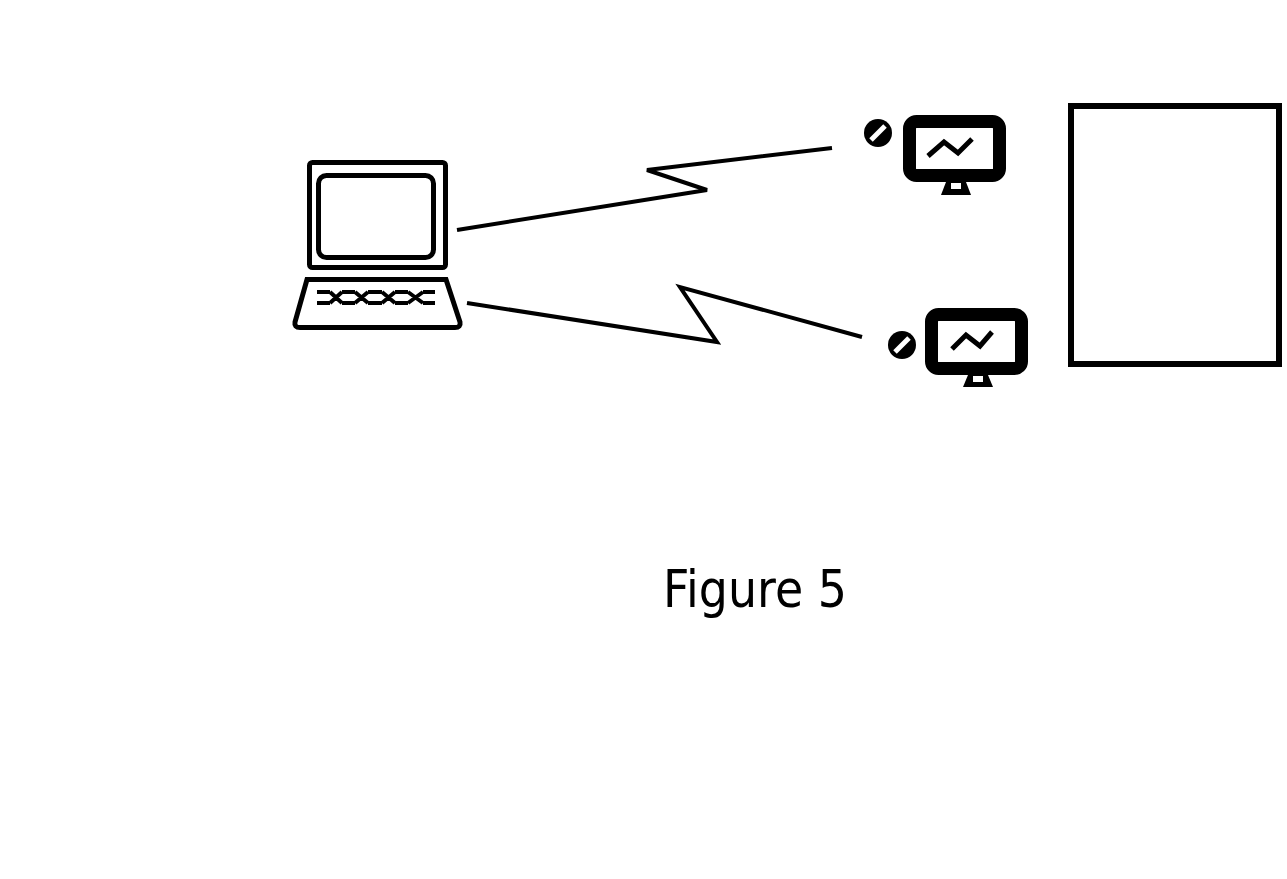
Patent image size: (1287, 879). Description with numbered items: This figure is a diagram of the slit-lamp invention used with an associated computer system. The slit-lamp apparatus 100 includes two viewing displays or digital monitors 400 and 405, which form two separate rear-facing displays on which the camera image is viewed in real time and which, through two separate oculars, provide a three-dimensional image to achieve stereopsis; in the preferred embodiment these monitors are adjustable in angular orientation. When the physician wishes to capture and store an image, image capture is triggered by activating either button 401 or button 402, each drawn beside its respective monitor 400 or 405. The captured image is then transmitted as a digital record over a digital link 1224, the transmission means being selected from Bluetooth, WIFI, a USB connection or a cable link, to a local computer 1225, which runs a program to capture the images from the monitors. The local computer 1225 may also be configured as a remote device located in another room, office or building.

The slit-lamp apparatus 100 is at (1180, 387).
The viewing display/digital monitor 400 is at (945, 94).
The button 401 is at (857, 97).
The button 402 is at (861, 363).
The viewing display/digital monitor 405 is at (1009, 393).
The digital link 1224 is at (667, 132).
The local computer 1225 is at (281, 278).